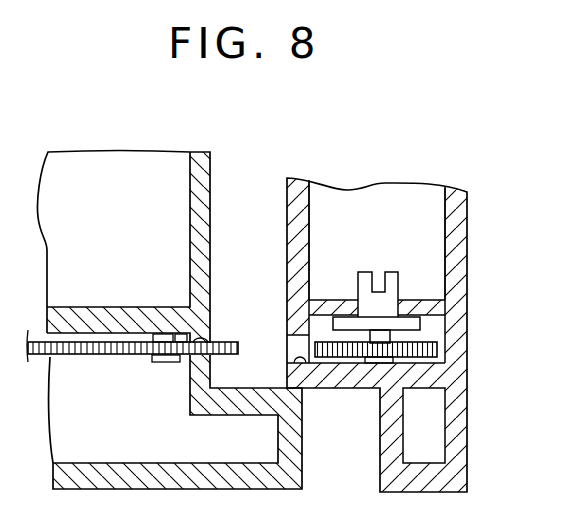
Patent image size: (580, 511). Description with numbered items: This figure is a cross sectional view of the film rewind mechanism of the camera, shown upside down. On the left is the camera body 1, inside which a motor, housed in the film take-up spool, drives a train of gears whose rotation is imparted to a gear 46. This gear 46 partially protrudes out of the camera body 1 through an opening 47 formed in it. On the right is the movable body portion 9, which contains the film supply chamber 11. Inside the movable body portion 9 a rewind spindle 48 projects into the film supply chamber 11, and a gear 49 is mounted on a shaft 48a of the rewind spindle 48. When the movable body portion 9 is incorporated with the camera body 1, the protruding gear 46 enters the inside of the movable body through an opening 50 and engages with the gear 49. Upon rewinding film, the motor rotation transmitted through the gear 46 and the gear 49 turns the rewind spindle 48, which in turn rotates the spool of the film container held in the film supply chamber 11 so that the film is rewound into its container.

The camera body 1 is at (141, 147).
The movable body portion 9 is at (377, 176).
The film supply chamber 11 is at (427, 240).
The gear 46 is at (128, 357).
The opening 47 is at (208, 340).
The rewind spindle 48 is at (392, 283).
The shaft 48a is at (377, 337).
The gear 49 is at (438, 350).
The opening 50 is at (300, 357).